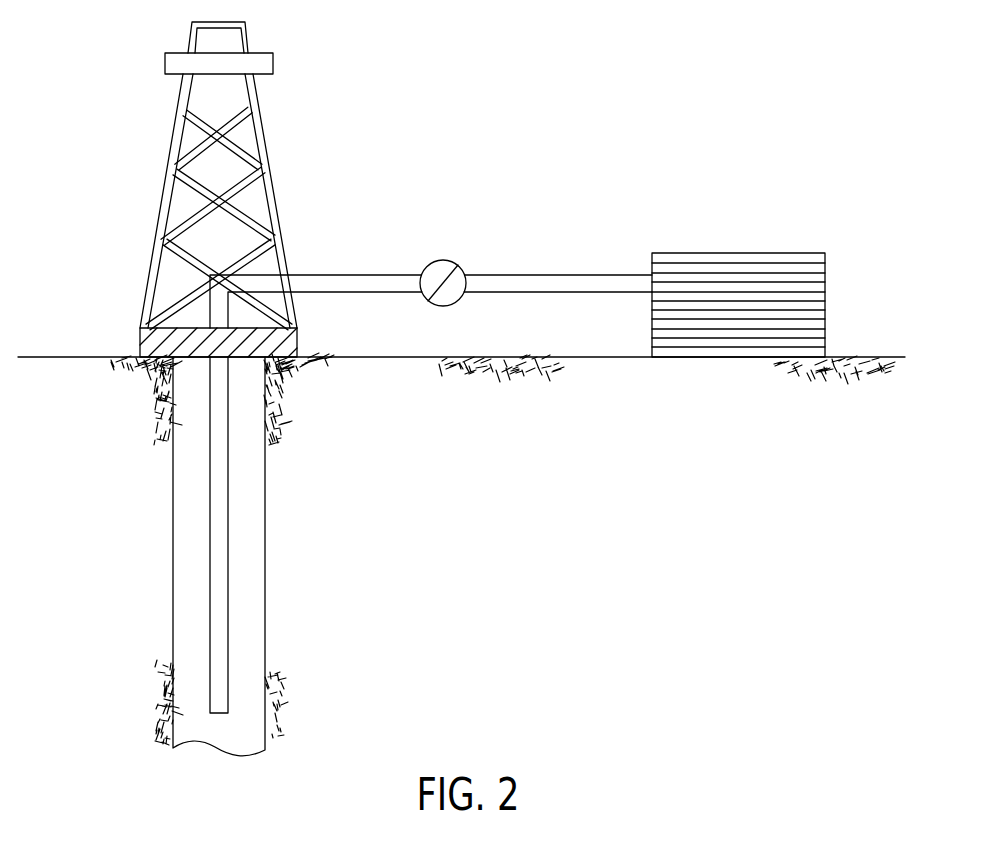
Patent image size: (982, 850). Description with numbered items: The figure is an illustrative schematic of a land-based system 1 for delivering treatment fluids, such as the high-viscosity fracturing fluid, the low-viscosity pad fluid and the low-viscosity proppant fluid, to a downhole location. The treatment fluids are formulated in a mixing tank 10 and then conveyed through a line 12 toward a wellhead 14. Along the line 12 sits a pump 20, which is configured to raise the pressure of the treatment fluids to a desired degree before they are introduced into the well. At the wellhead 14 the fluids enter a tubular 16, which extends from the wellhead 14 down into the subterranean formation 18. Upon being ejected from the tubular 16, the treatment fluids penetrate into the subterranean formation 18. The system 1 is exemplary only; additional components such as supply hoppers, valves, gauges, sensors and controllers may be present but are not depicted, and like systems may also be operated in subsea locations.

The system 1 is at (88, 47).
The mixing tank 10 is at (693, 253).
The line 12 is at (333, 273).
The wellhead 14 is at (140, 345).
The tubular 16 is at (266, 554).
The subterranean formation 18 is at (55, 598).
The pump 20 is at (447, 260).